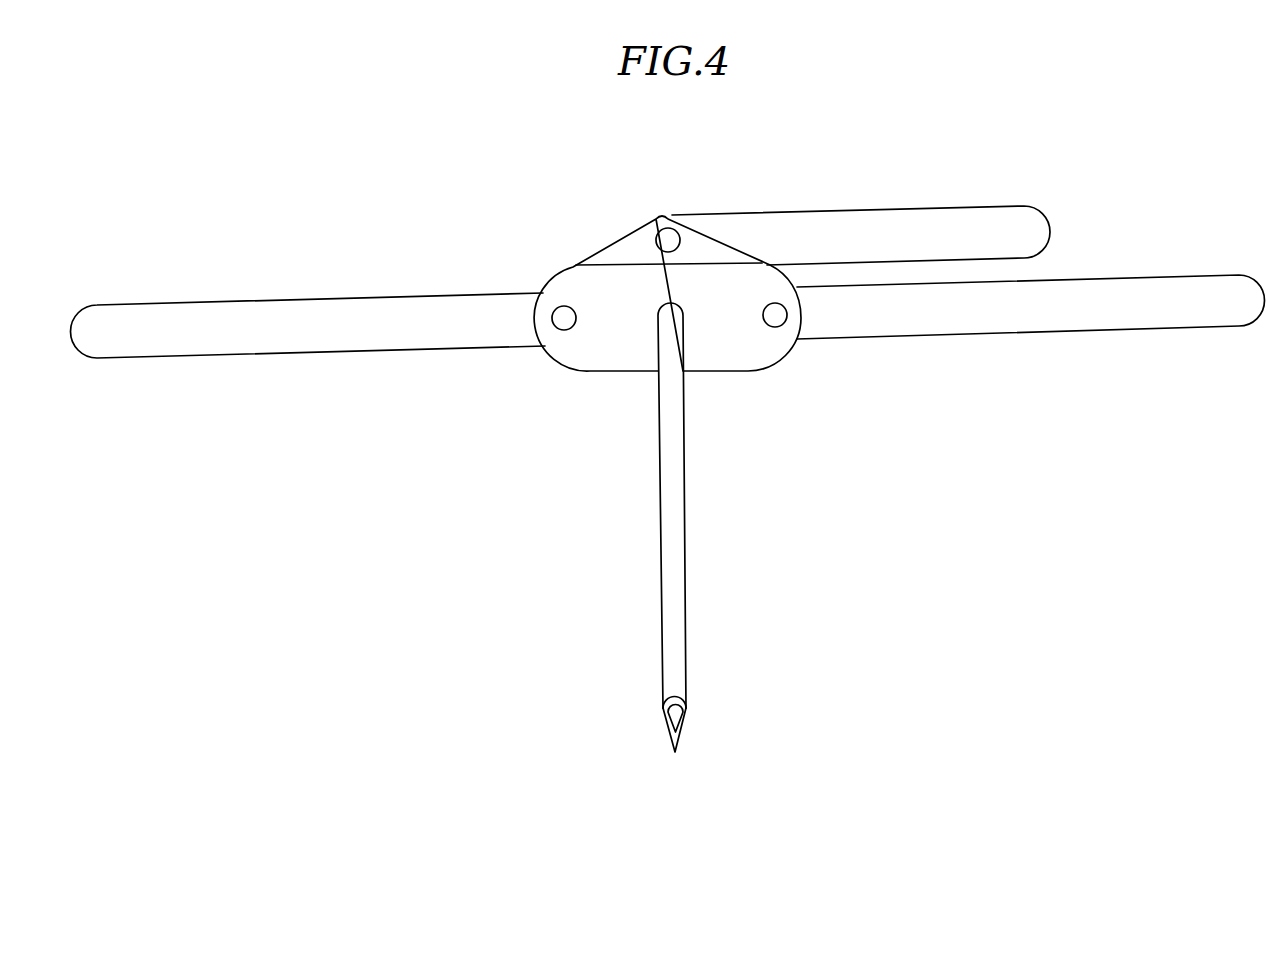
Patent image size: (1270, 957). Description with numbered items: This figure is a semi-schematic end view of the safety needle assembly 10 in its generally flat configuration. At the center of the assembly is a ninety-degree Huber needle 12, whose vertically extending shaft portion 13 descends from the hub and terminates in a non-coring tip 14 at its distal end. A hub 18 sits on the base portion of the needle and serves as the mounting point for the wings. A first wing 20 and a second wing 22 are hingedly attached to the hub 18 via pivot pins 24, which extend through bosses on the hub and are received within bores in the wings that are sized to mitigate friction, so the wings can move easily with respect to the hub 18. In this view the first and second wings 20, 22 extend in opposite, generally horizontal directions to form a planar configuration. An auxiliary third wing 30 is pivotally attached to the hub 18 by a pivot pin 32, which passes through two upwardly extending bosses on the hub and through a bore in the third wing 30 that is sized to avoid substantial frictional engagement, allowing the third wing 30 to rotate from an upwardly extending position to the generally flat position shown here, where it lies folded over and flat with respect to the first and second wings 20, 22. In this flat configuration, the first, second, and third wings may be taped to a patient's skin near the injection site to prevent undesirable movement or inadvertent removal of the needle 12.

The safety needle assembly 10 is at (574, 573).
The Huber needle 12 is at (698, 549).
The shaft portion 13 is at (678, 458).
The non-coring tip 14 is at (675, 752).
The hub 18 is at (612, 245).
The first wing 20 is at (393, 297).
The second wing 22 is at (1085, 278).
The pivot pins 24 is at (564, 320).
The third wing 30 is at (898, 208).
The pivot pin 32 is at (667, 240).